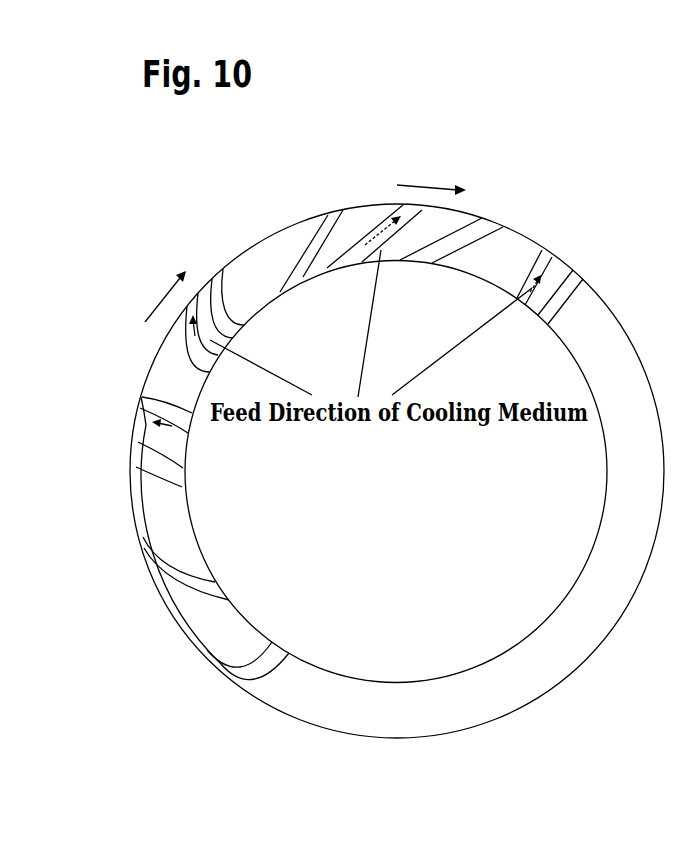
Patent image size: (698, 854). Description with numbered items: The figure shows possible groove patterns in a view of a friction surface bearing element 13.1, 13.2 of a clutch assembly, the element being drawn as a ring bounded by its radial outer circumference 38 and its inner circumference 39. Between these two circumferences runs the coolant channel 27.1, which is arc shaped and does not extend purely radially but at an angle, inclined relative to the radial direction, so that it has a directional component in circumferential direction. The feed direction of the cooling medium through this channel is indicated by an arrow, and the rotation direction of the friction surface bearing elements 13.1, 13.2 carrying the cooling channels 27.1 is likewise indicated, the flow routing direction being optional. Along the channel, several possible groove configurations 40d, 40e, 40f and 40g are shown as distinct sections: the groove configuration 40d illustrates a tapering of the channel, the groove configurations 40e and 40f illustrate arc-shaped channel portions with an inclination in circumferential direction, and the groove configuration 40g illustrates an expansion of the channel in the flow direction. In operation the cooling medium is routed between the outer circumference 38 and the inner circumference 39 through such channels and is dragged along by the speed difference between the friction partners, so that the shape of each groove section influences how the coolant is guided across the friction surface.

The friction surface bearing element 13.1 is at (357, 439).
The friction surface bearing element 13.2 is at (357, 439).
The coolant channel 27.1 is at (346, 410).
The radial outer circumference 38 is at (520, 233).
The inner circumference 39 is at (472, 277).
The groove configuration 40d is at (158, 574).
The groove configuration 40e is at (199, 292).
The groove configuration 40f is at (352, 225).
The groove configuration 40g is at (557, 272).